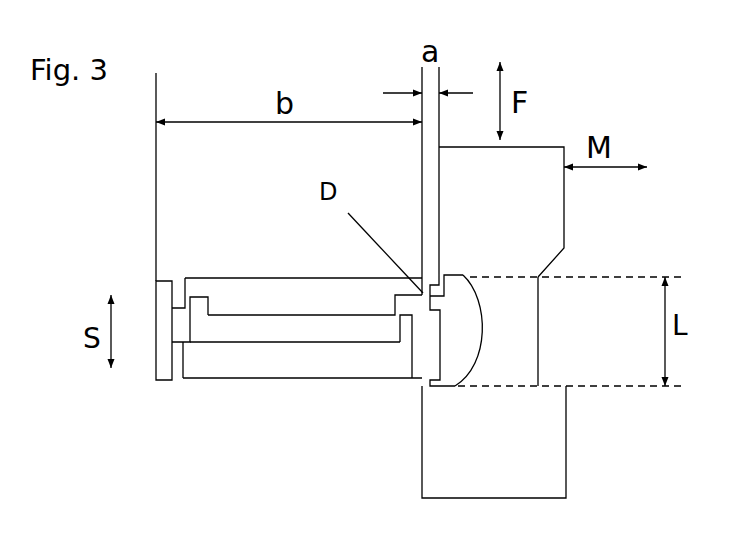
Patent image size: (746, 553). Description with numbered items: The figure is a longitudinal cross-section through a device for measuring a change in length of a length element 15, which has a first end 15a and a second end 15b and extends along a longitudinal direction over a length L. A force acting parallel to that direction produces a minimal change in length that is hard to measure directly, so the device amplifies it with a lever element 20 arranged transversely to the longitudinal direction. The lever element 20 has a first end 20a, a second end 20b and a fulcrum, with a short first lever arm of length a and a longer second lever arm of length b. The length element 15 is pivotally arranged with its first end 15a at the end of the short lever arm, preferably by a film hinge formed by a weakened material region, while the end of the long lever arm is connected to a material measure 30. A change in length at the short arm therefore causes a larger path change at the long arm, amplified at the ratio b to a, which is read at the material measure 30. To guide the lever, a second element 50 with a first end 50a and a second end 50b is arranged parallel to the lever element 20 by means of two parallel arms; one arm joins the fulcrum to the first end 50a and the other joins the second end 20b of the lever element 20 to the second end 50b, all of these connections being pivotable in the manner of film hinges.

The length element 15 is at (517, 338).
The first end of the length element 15a is at (503, 277).
The second end of the length element 15b is at (492, 392).
The lever element 20 is at (270, 297).
The first end of the lever element 20a is at (447, 280).
The second end of the lever element 20b is at (183, 310).
The material measure 30 is at (152, 348).
The second element 50 is at (300, 358).
The first end of the second element 50a is at (407, 383).
The second end of the second element 50b is at (193, 340).